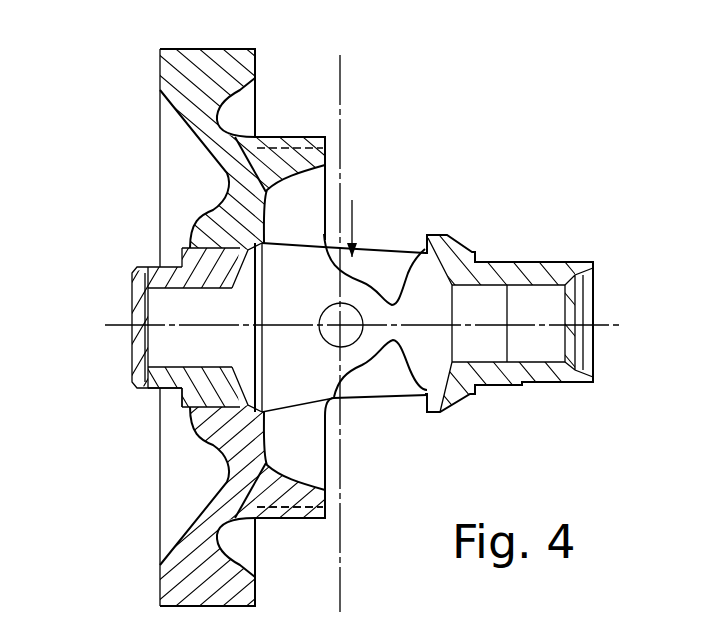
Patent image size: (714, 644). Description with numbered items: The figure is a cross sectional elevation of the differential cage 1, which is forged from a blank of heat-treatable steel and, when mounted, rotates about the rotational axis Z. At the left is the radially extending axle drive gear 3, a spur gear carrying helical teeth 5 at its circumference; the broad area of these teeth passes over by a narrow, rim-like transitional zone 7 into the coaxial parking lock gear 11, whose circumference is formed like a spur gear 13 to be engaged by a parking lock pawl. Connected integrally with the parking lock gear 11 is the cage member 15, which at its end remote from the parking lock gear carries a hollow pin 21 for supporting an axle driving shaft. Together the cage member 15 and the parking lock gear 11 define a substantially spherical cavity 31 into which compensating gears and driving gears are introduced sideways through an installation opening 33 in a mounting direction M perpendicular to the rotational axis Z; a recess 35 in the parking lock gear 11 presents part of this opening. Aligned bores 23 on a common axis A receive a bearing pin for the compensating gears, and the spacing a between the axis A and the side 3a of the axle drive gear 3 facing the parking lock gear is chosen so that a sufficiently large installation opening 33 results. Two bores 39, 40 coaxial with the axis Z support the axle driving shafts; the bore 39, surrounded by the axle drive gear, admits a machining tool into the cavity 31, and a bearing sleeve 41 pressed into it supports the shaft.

The differential cage 1 is at (502, 190).
The axle drive gear 3 is at (158, 478).
The side of the axle drive gear 3a is at (256, 108).
The helical teeth 5 is at (259, 61).
The transitional zone 7 is at (205, 122).
The parking lock gear 11 is at (292, 134).
The spur gear 13 is at (273, 510).
The cage member 15 is at (378, 401).
The hollow pin 21 is at (509, 272).
The aligned bores 23 is at (348, 313).
The spherical cavity 31 is at (306, 302).
The installation opening 33 is at (329, 250).
The recess 35 is at (295, 205).
The bore 39 is at (131, 385).
The bore 40 is at (556, 290).
The bearing sleeve 41 is at (146, 273).
The mounting direction M is at (357, 208).
The rotational axis Z is at (413, 326).
The axis of the aligned bores A is at (340, 487).
The spacing a is at (257, 538).